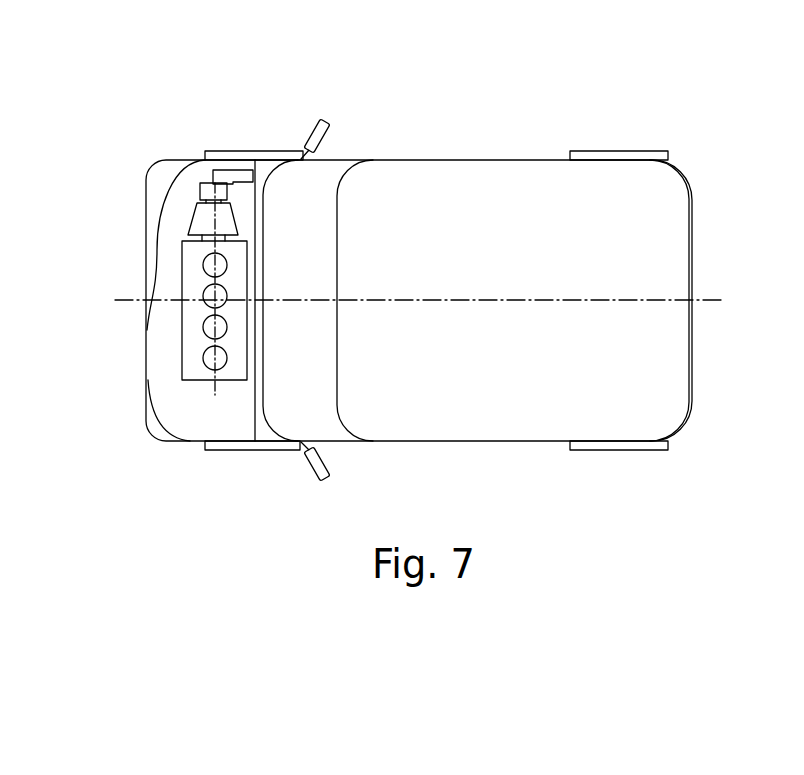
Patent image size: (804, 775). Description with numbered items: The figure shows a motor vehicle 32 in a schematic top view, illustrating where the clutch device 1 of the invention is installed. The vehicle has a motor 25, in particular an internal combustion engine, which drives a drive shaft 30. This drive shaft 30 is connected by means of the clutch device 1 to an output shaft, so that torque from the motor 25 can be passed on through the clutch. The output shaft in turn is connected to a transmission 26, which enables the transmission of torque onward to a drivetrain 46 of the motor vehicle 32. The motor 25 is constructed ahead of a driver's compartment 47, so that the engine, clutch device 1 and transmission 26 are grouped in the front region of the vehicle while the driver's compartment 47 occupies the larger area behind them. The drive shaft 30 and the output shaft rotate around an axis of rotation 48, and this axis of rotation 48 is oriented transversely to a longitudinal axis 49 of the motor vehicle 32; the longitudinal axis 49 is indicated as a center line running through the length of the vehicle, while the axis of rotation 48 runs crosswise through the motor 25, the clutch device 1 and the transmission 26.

The clutch device 1 is at (169, 299).
The motor 25 is at (225, 381).
The transmission 26 is at (203, 183).
The drive shaft 30 is at (197, 236).
The motor vehicle 32 is at (525, 114).
The drivetrain 46 is at (227, 170).
The driver's compartment 47 is at (398, 175).
The axis of rotation 48 is at (205, 342).
The longitudinal axis 49 is at (450, 300).